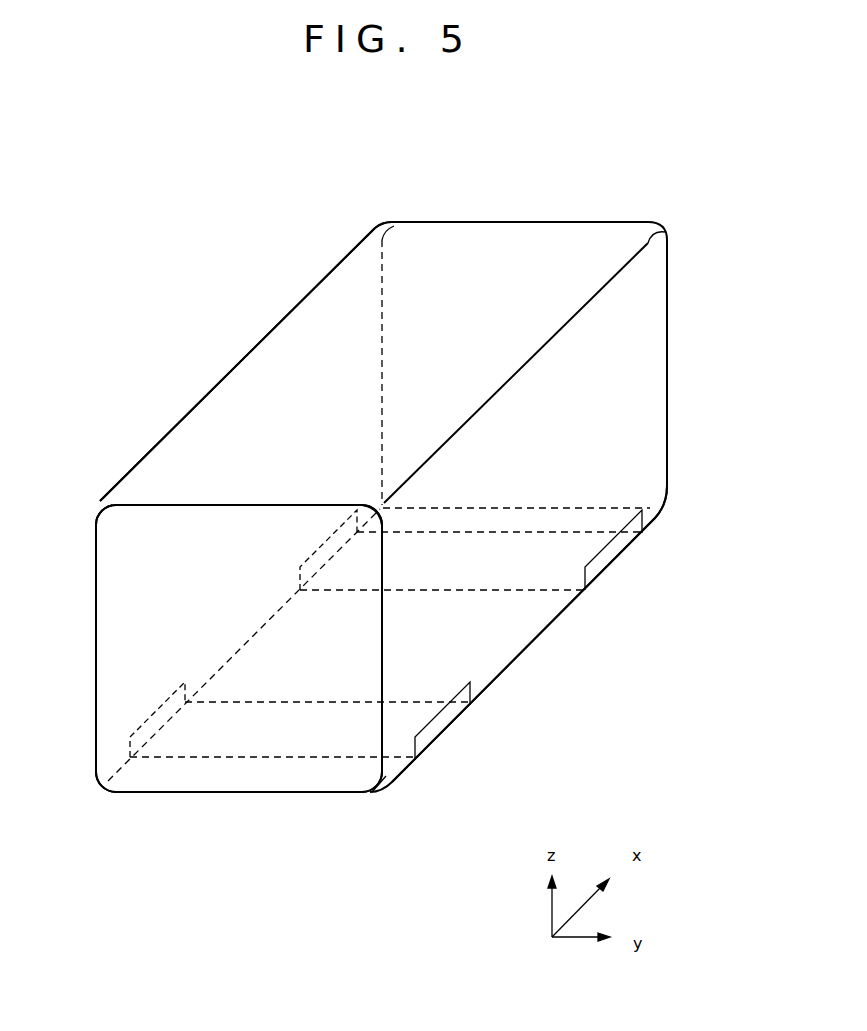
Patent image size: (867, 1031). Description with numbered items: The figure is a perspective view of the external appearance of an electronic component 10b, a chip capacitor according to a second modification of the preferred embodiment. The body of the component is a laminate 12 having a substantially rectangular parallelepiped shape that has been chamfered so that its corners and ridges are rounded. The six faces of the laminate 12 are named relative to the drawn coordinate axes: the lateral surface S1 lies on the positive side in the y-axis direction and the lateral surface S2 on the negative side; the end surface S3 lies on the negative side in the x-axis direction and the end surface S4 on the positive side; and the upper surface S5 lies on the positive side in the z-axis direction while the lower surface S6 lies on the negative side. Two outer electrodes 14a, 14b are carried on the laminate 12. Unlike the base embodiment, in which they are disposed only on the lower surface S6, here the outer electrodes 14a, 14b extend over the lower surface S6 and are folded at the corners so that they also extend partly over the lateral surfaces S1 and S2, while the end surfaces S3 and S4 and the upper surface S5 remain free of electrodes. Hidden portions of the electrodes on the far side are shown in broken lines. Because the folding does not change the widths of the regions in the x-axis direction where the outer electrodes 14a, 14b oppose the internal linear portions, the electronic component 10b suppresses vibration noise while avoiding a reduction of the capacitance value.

The electronic component 10b is at (221, 196).
The laminate 12 is at (550, 208).
The outer electrode 14a is at (437, 737).
The outer electrode 14b is at (593, 568).
The lateral surface S1 is at (515, 575).
The lateral surface S2 is at (228, 436).
The end surface S3 is at (243, 688).
The end surface S4 is at (577, 257).
The upper surface S5 is at (320, 378).
The lower surface S6 is at (465, 645).